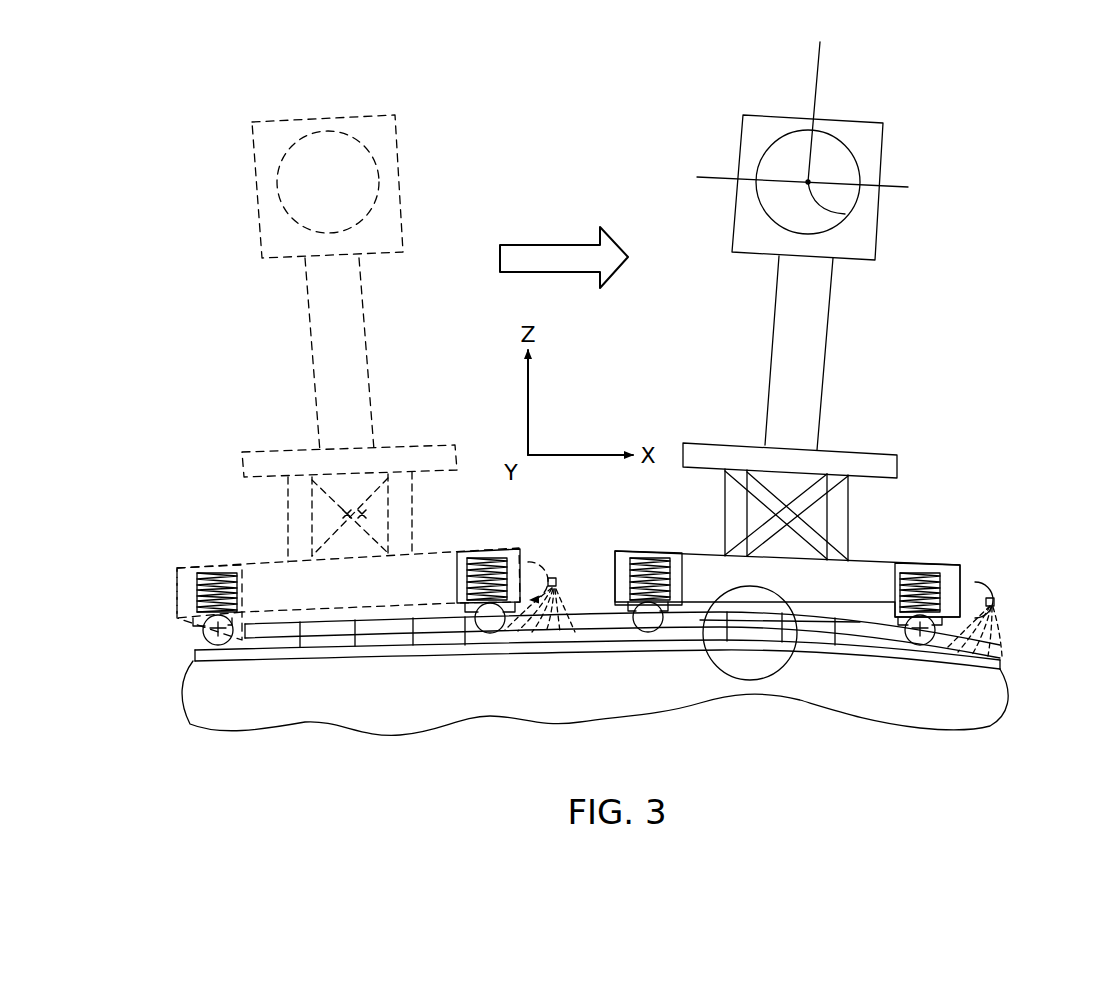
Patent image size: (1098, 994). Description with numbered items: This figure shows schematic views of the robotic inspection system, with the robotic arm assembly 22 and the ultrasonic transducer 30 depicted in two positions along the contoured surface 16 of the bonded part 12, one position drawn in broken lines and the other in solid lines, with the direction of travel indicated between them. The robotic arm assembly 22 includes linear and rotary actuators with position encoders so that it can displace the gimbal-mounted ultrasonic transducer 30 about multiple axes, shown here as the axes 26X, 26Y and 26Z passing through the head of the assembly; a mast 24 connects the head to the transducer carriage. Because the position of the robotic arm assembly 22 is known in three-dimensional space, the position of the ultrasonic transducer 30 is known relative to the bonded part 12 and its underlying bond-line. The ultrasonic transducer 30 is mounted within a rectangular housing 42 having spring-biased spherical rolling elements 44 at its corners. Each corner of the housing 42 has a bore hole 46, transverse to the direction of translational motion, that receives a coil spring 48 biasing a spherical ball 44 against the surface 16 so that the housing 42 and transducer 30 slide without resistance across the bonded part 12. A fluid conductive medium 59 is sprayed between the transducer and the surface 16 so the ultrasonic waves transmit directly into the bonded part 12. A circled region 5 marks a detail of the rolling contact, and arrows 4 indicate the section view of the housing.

The section view arrows 4 is at (806, 604).
The detail circle 5 is at (750, 680).
The bonded part 12 is at (494, 686).
The surface 16 is at (195, 640).
The robotic arm assembly 22 is at (430, 146).
The mast 24 is at (367, 333).
The axis 26X is at (892, 185).
The axis 26Y is at (845, 214).
The axis 26Z is at (817, 70).
The ultrasonic transducer 30 is at (290, 608).
The rectangular housing 42 is at (341, 596).
The spherical rolling element 44 is at (197, 600).
The bore hole 46 is at (214, 570).
The coil spring 48 is at (178, 602).
The fluid conductive medium 59 is at (564, 588).